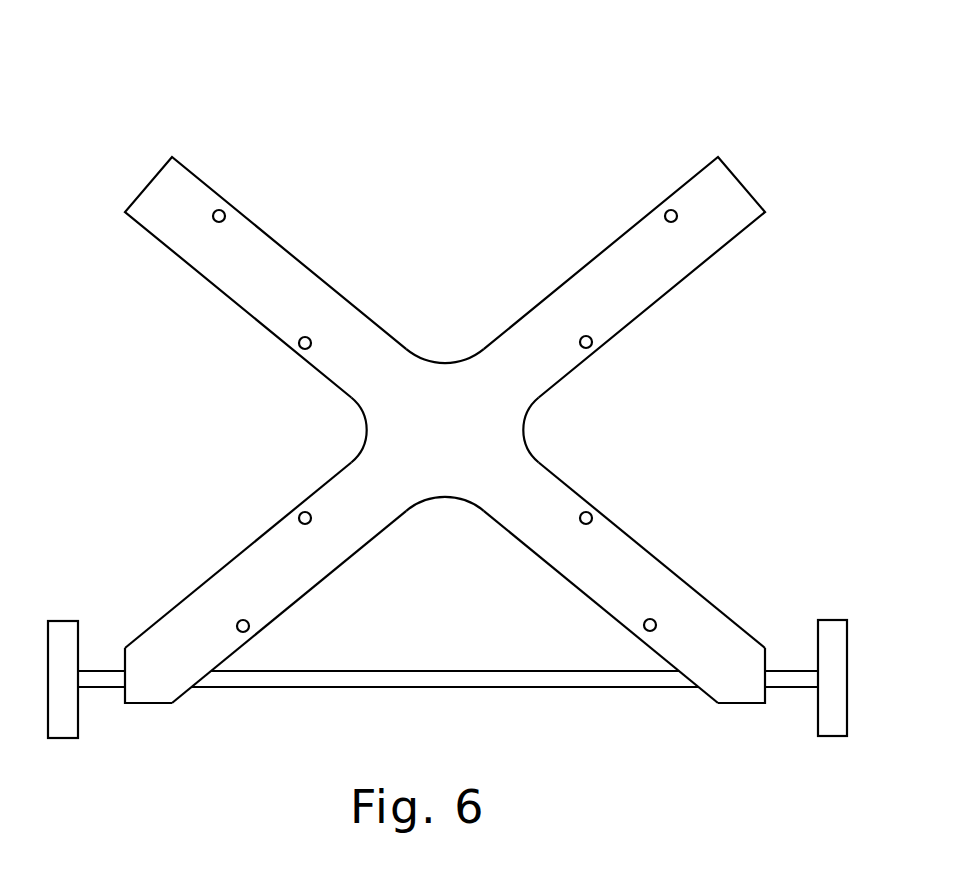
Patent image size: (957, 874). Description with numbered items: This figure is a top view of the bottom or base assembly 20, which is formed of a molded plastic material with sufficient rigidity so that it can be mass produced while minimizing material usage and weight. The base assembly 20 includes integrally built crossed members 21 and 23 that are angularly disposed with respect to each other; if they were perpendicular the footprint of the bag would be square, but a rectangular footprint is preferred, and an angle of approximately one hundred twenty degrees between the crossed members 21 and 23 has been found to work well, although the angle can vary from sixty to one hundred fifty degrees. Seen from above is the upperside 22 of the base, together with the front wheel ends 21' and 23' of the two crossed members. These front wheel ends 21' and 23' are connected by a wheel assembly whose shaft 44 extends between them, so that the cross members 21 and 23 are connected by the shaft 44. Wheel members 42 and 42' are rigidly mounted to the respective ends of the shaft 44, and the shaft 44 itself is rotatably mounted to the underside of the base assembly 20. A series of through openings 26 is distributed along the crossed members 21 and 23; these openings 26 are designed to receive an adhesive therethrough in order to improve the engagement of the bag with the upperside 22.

The base assembly 20 is at (250, 100).
The crossed member 21 is at (265, 583).
The front wheel end 21' is at (168, 726).
The upperside 22 is at (447, 452).
The crossed member 23 is at (265, 277).
The front wheel end 23' is at (734, 718).
The through openings 26 is at (593, 340).
The wheel member 42 is at (78, 639).
The wheel member 42' is at (818, 638).
The shaft 44 is at (567, 688).